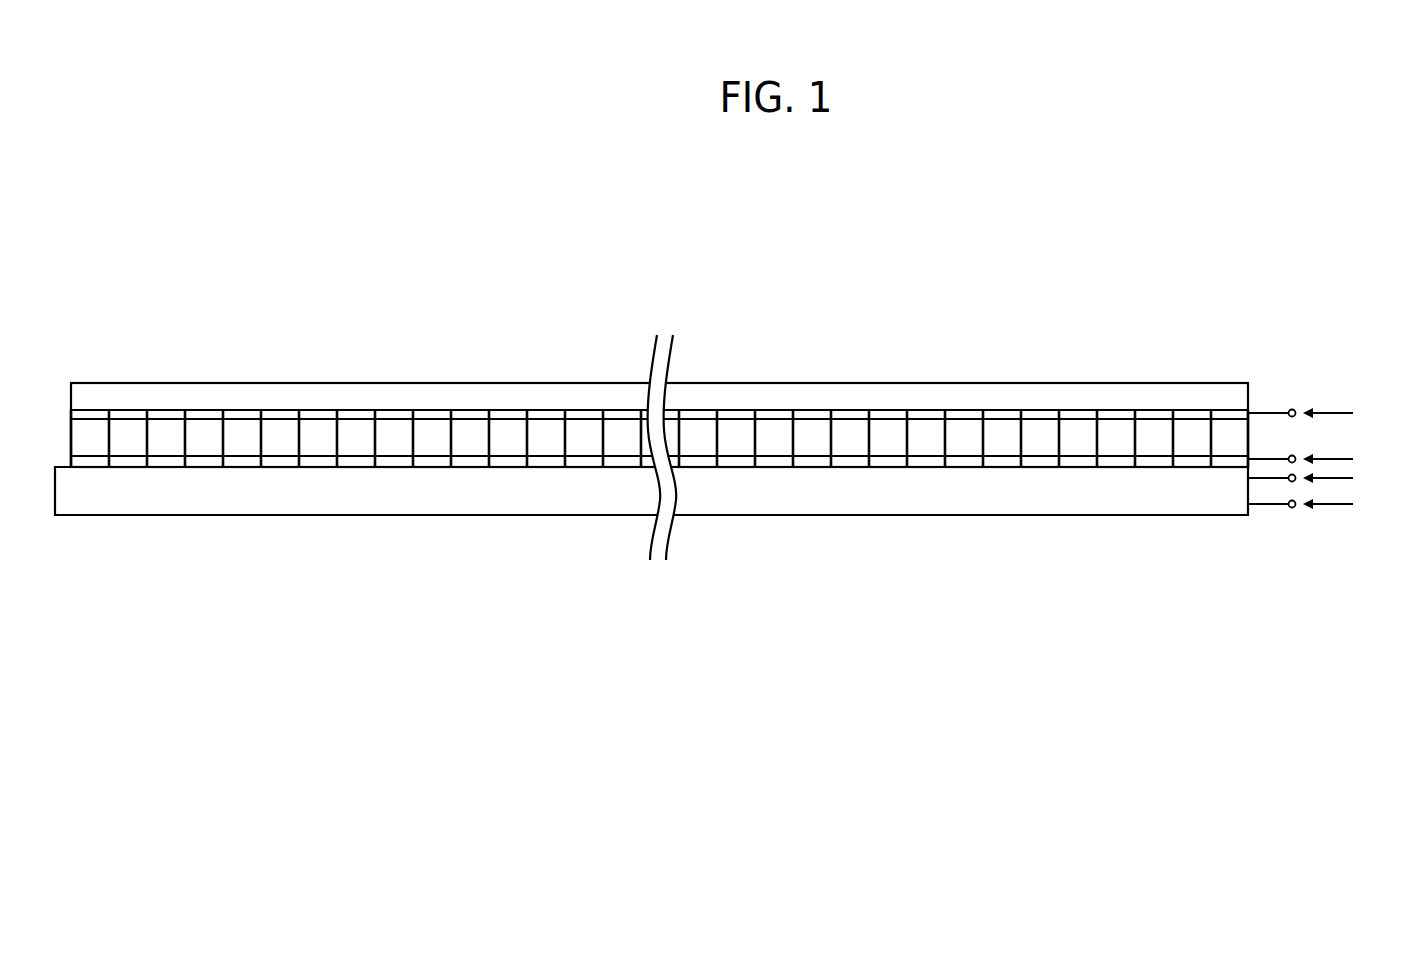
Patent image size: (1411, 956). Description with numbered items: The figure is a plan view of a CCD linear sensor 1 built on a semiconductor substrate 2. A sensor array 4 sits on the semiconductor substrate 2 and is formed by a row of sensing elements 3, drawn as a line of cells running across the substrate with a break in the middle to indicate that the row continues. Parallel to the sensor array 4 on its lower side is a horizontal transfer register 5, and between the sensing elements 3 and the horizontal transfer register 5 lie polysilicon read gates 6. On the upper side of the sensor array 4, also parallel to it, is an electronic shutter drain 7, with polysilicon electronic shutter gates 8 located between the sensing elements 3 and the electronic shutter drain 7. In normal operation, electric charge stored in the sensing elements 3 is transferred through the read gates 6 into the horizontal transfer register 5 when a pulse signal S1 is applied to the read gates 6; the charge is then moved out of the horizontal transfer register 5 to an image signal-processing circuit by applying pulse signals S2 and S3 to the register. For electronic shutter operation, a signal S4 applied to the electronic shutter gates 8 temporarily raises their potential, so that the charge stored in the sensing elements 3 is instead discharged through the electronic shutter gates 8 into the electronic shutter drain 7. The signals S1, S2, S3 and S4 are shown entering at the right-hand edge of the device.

The CCD linear sensor 1 is at (535, 383).
The semiconductor substrate 2 is at (611, 564).
The sensing elements 3 is at (240, 411).
The sensor array 4 is at (1117, 414).
The horizontal transfer register 5 is at (512, 515).
The polysilicon read gates 6 is at (243, 467).
The electronic shutter drain 7 is at (499, 383).
The polysilicon electronic shutter gates 8 is at (434, 418).
The pulse signal S1 is at (1319, 458).
The pulse signal S2 is at (1319, 480).
The pulse signal S3 is at (1319, 506).
The signal S4 is at (1319, 413).